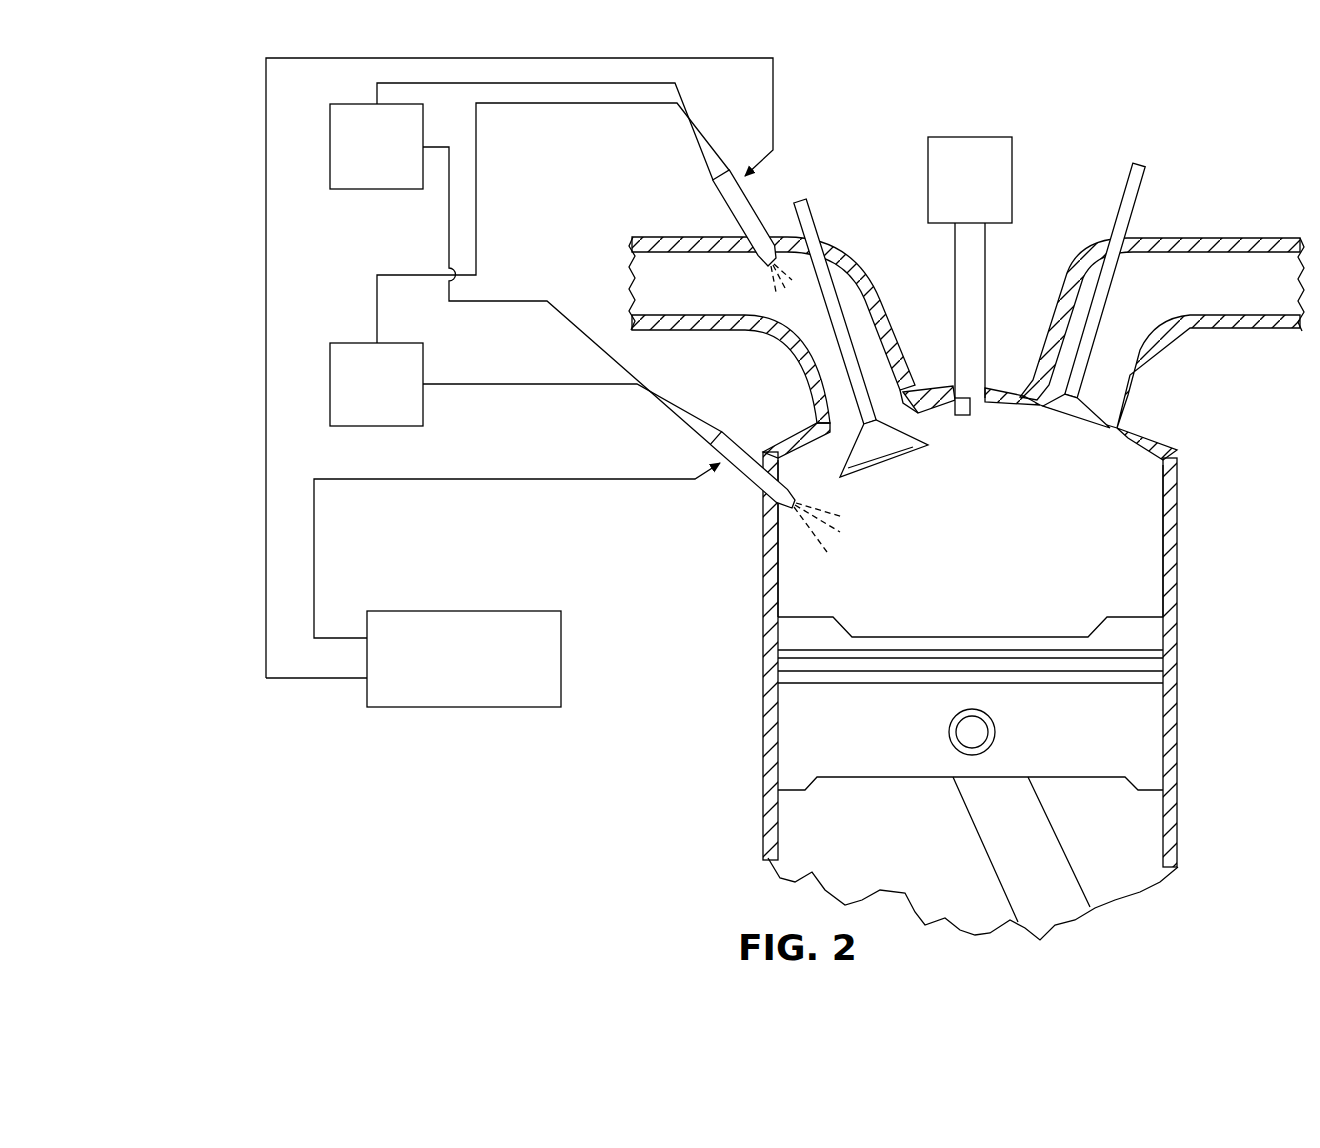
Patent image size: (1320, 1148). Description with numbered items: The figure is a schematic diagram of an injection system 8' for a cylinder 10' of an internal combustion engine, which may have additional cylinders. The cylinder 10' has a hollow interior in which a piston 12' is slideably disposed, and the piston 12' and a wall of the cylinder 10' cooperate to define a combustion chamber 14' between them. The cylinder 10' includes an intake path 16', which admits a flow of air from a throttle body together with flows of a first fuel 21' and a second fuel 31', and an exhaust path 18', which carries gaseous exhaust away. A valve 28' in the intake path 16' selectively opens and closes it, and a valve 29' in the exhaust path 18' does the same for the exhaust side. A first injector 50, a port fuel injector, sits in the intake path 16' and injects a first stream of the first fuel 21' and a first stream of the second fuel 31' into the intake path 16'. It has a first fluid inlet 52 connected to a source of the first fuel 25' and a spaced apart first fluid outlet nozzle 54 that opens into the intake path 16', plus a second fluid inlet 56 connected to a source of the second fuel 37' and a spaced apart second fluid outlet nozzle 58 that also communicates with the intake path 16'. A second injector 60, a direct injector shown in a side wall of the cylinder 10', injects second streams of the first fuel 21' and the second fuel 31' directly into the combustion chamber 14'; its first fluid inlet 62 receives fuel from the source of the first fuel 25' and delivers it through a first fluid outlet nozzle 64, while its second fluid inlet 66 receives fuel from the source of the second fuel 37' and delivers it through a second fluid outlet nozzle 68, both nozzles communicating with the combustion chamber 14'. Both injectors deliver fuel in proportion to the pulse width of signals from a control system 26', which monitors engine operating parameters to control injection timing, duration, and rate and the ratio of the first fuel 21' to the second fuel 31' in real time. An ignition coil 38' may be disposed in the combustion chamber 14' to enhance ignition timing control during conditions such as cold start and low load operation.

The injection system 8' is at (974, 489).
The cylinder 10' is at (1026, 696).
The piston 12' is at (1049, 769).
The combustion chamber 14' is at (970, 538).
The intake path 16' is at (772, 330).
The exhaust path 18' is at (1162, 333).
The first fuel 21' is at (852, 242).
The source of the first fuel 25' is at (376, 179).
The control system 26' is at (519, 382).
The valve 28' is at (897, 334).
The valve 29' is at (1094, 327).
The second fuel 31' is at (744, 321).
The source of the second fuel 37' is at (416, 368).
The ignition coil 38' is at (987, 243).
The first injector 50 is at (776, 251).
The first fluid inlet 52 is at (742, 178).
The first fluid outlet nozzle 54 is at (812, 243).
The second fluid inlet 56 is at (722, 172).
The second fluid outlet nozzle 58 is at (768, 270).
The second injector 60 is at (759, 513).
The first fluid inlet 62 is at (707, 423).
The first fluid outlet nozzle 64 is at (800, 498).
The second fluid inlet 66 is at (710, 445).
The second fluid outlet nozzle 68 is at (797, 518).